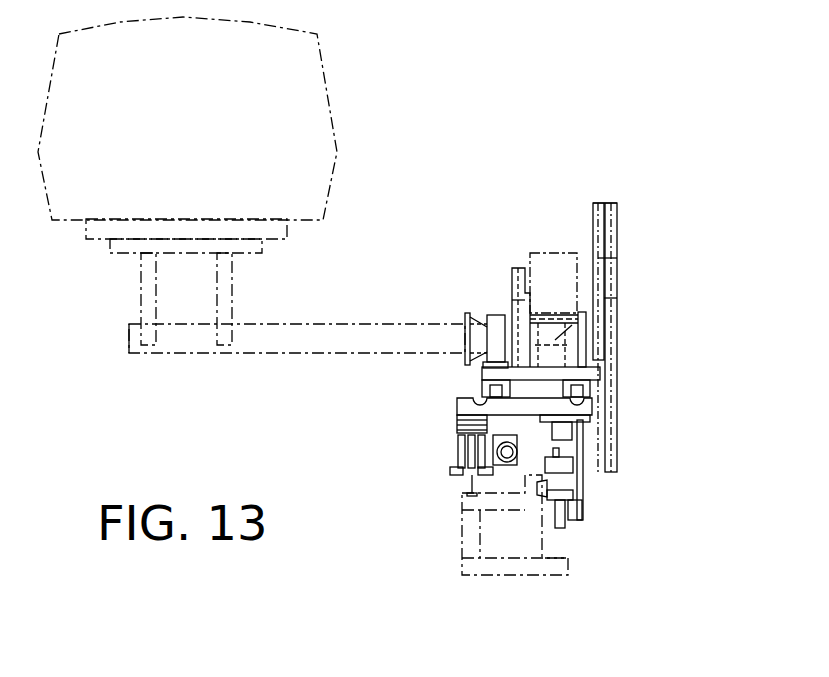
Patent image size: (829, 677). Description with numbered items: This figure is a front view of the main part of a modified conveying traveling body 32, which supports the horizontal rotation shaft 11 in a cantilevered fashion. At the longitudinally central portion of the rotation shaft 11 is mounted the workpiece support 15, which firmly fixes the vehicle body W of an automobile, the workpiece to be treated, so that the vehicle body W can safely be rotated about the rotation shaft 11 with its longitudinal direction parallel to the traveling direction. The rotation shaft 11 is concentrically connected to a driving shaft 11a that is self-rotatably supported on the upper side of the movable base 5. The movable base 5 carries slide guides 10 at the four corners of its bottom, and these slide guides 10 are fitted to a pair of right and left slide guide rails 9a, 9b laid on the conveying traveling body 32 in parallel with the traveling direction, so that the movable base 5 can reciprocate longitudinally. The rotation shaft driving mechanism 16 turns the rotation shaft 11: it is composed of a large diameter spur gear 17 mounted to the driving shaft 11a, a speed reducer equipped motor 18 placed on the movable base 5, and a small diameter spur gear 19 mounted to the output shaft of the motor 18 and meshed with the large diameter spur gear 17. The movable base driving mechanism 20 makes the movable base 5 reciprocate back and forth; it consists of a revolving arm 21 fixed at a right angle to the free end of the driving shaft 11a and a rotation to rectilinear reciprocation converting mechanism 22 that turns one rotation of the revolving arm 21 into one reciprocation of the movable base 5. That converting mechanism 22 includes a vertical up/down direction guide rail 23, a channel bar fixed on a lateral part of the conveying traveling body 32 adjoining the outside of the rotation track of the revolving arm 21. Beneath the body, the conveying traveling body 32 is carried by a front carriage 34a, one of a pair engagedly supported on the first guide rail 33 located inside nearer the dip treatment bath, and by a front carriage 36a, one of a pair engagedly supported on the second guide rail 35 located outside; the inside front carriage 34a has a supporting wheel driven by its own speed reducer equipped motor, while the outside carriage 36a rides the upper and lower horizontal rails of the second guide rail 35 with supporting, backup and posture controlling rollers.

The vehicle body W is at (198, 131).
The workpiece support 15 is at (120, 256).
The rotation shaft 11 is at (278, 345).
The driving shaft 11a is at (587, 323).
The rotation shaft driving mechanism 16 is at (518, 262).
The large diameter spur gear 17 is at (487, 312).
The speed reducer equipped motor 18 is at (557, 263).
The small diameter spur gear 19 is at (512, 282).
The movable base driving mechanism 20 is at (603, 200).
The revolving arm 21 is at (617, 258).
The rotation to rectilinear reciprocation converting mechanism 22 is at (622, 232).
The guide rail 23 is at (617, 298).
The movable base 5 is at (580, 373).
The slide guides 10 is at (483, 375).
The slide guide rail 9a is at (460, 393).
The slide guide rail 9b is at (592, 408).
The conveying traveling body 32 is at (455, 408).
The first guide rail 33 is at (462, 483).
The front carriage 34a is at (453, 447).
The second guide rail 35 is at (577, 477).
The front carriage 36a is at (589, 487).